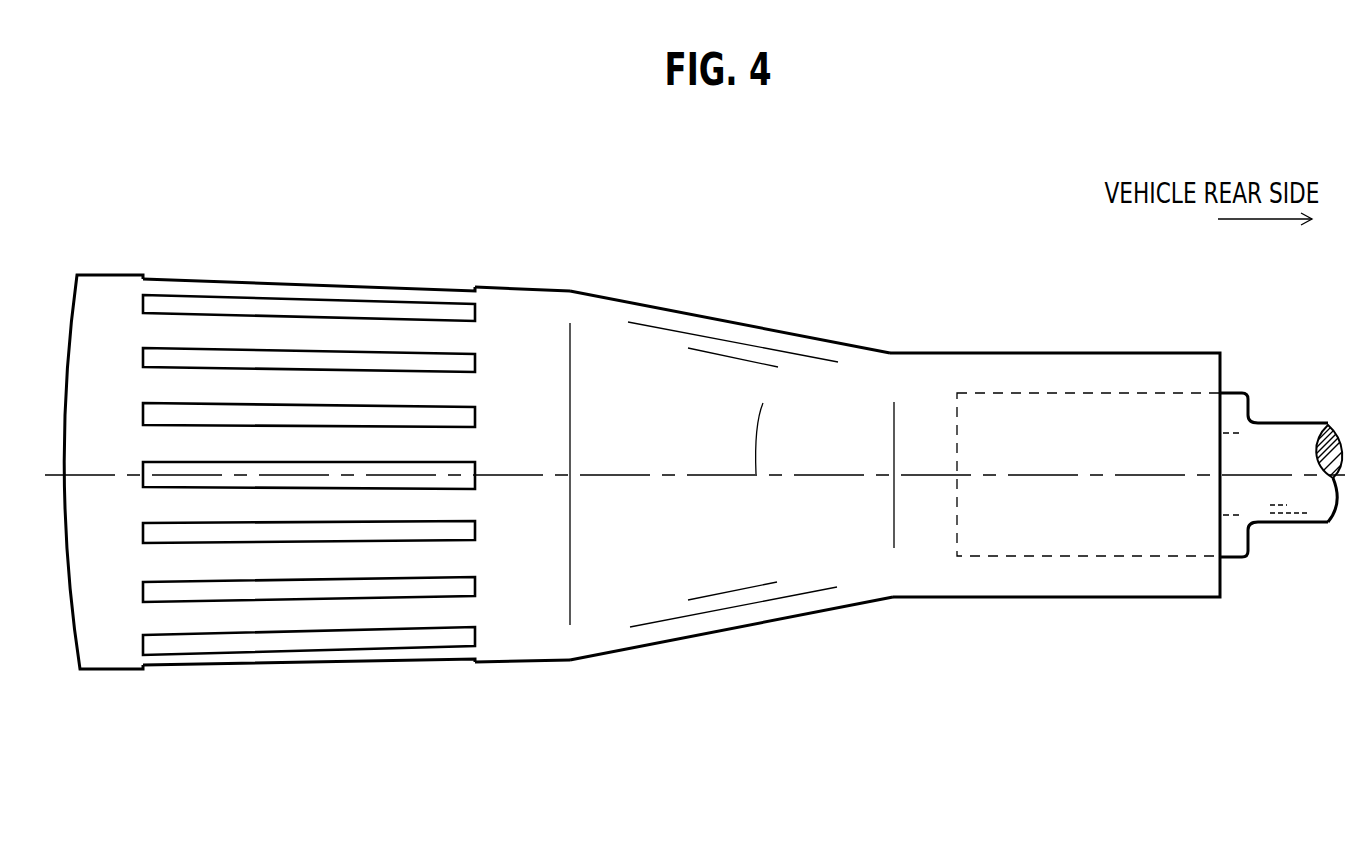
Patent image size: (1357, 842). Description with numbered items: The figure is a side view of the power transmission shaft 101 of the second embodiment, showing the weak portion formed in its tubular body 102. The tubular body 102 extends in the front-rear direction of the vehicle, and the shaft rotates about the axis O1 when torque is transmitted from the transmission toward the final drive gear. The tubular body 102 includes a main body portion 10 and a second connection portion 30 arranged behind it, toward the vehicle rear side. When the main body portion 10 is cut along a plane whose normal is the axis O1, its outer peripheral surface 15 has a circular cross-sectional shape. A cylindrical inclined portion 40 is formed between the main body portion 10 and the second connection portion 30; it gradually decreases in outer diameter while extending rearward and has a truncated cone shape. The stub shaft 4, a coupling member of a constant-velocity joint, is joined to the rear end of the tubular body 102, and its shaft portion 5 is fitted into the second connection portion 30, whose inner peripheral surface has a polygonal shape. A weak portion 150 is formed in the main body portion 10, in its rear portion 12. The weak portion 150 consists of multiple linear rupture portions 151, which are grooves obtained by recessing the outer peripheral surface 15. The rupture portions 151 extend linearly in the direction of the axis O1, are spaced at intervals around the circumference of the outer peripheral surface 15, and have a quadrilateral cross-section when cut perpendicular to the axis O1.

The main body portion 10 is at (710, 459).
The tubular body 102 is at (135, 246).
The weak portion 150 is at (365, 465).
The rupture portions 151 is at (365, 485).
The rear portion 12 is at (407, 333).
The outer peripheral surface 15 is at (508, 595).
The inclined portion 40 is at (735, 548).
The power transmission shaft 101 is at (1027, 421).
The second connection portion 30 is at (1067, 575).
The shaft portion 5 is at (1140, 528).
The stub shaft 4 is at (1297, 498).
The axis O1 is at (775, 390).